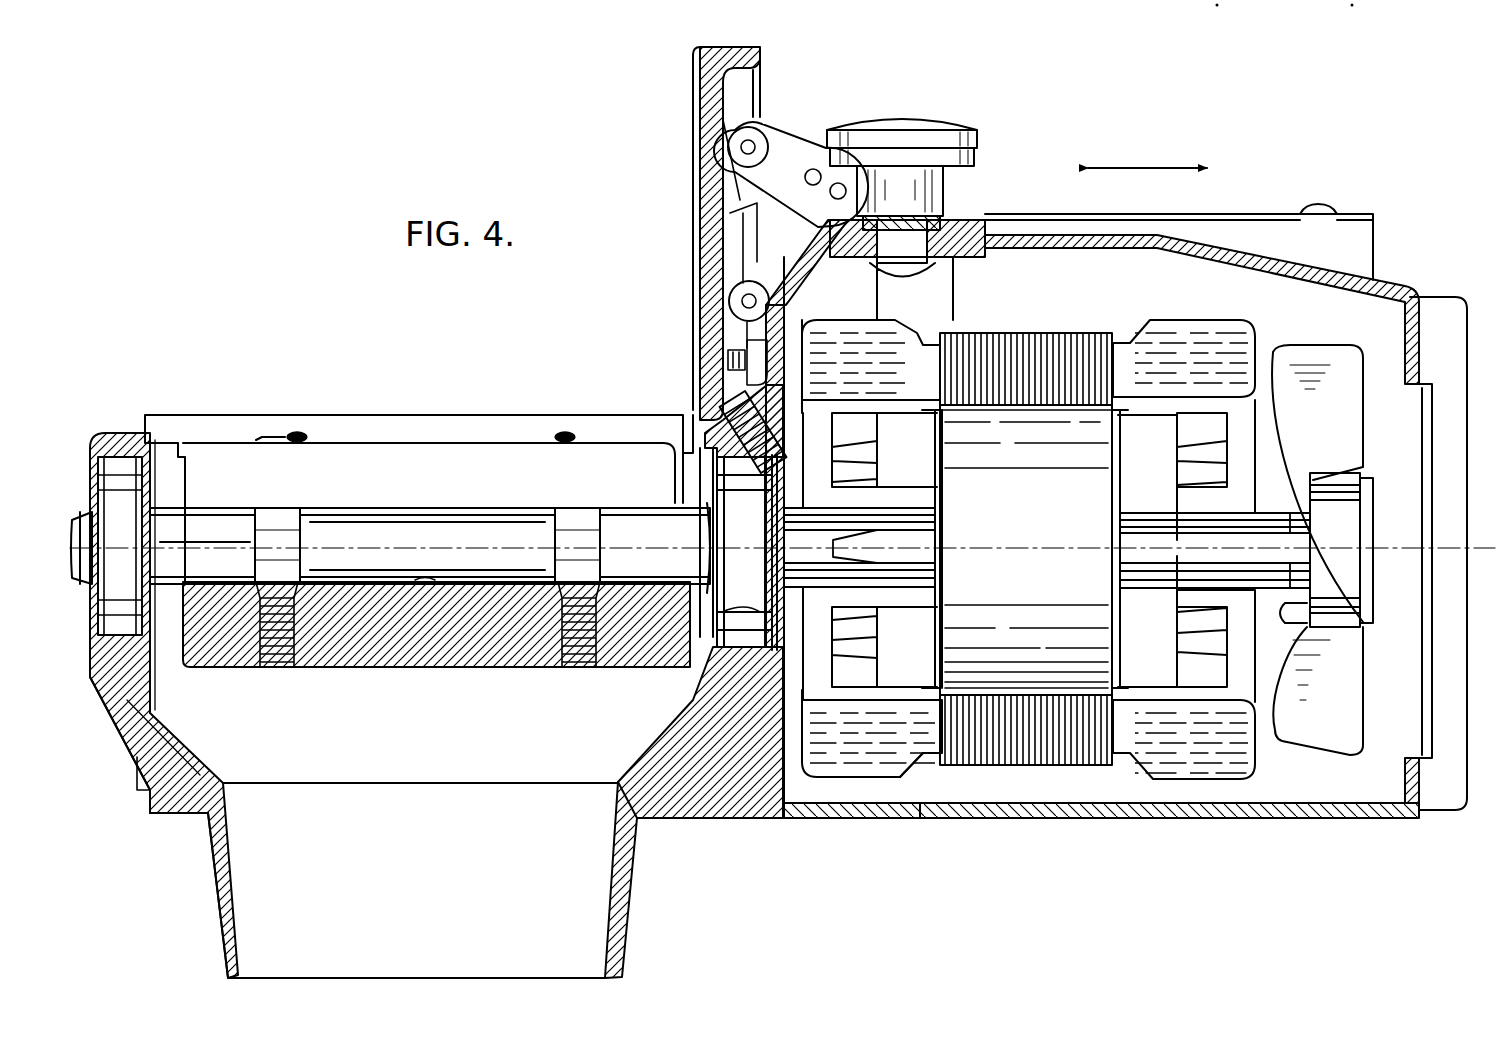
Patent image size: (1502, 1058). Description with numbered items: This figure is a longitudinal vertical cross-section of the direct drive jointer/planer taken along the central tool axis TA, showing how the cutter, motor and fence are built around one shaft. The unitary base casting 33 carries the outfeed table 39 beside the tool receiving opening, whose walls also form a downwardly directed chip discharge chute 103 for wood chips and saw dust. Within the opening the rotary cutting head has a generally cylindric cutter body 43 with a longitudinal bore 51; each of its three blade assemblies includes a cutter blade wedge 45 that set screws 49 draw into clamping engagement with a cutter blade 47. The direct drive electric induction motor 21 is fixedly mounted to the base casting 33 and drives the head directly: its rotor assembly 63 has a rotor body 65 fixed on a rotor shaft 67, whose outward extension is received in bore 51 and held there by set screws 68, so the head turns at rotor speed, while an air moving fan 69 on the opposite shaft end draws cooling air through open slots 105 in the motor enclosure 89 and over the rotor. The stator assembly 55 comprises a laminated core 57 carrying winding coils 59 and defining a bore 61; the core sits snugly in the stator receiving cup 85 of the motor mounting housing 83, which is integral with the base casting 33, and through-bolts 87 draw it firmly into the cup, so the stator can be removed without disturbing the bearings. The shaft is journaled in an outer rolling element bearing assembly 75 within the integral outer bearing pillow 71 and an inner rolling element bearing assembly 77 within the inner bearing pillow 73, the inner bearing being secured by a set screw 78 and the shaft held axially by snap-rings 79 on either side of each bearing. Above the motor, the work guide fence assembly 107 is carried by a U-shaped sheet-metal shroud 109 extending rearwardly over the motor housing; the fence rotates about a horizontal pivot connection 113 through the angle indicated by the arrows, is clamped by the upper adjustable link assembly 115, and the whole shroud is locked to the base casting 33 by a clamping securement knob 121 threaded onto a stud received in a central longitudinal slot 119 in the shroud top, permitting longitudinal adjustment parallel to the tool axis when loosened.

The direct drive electric induction motor 21 is at (1150, 824).
The unitary base casting 33 is at (172, 826).
The outfeed table 39 is at (566, 408).
The cutter body 43 is at (378, 662).
The cutter blade wedge 45 is at (412, 475).
The cutter blade 47 is at (260, 436).
The set screws 49 is at (305, 435).
The longitudinal bore 51 is at (418, 584).
The stator assembly 55 is at (912, 778).
The core 57 is at (1005, 770).
The winding coils 59 is at (1213, 779).
The bore 61 is at (1072, 692).
The rotor assembly 63 is at (1152, 425).
The rotor body 65 is at (1035, 425).
The rotor shaft 67 is at (450, 537).
The set screws 68 is at (279, 668).
The air moving fan 69 is at (1368, 356).
The outer bearing pillow 71 is at (120, 452).
The inner bearing pillow 73 is at (752, 690).
The outer rolling element bearing assembly 75 is at (121, 474).
The inner rolling element bearing assembly 77 is at (737, 628).
The set screw 78 is at (745, 405).
The snap-rings 79 is at (87, 500).
The motor mounting housing 83 is at (842, 818).
The stator receiving cup 85 is at (936, 790).
The through-bolts 87 is at (727, 358).
The motor enclosure 89 is at (1346, 283).
The chip discharge chute 103 is at (224, 900).
The open slots 105 is at (1410, 402).
The work guide fence assembly 107 is at (690, 133).
The shroud 109 is at (1226, 212).
The horizontal pivot connection 113 is at (742, 306).
The upper adjustable link assembly 115 is at (790, 127).
The central longitudinal slot 119 is at (770, 102).
The clamping securement knob 121 is at (970, 124).